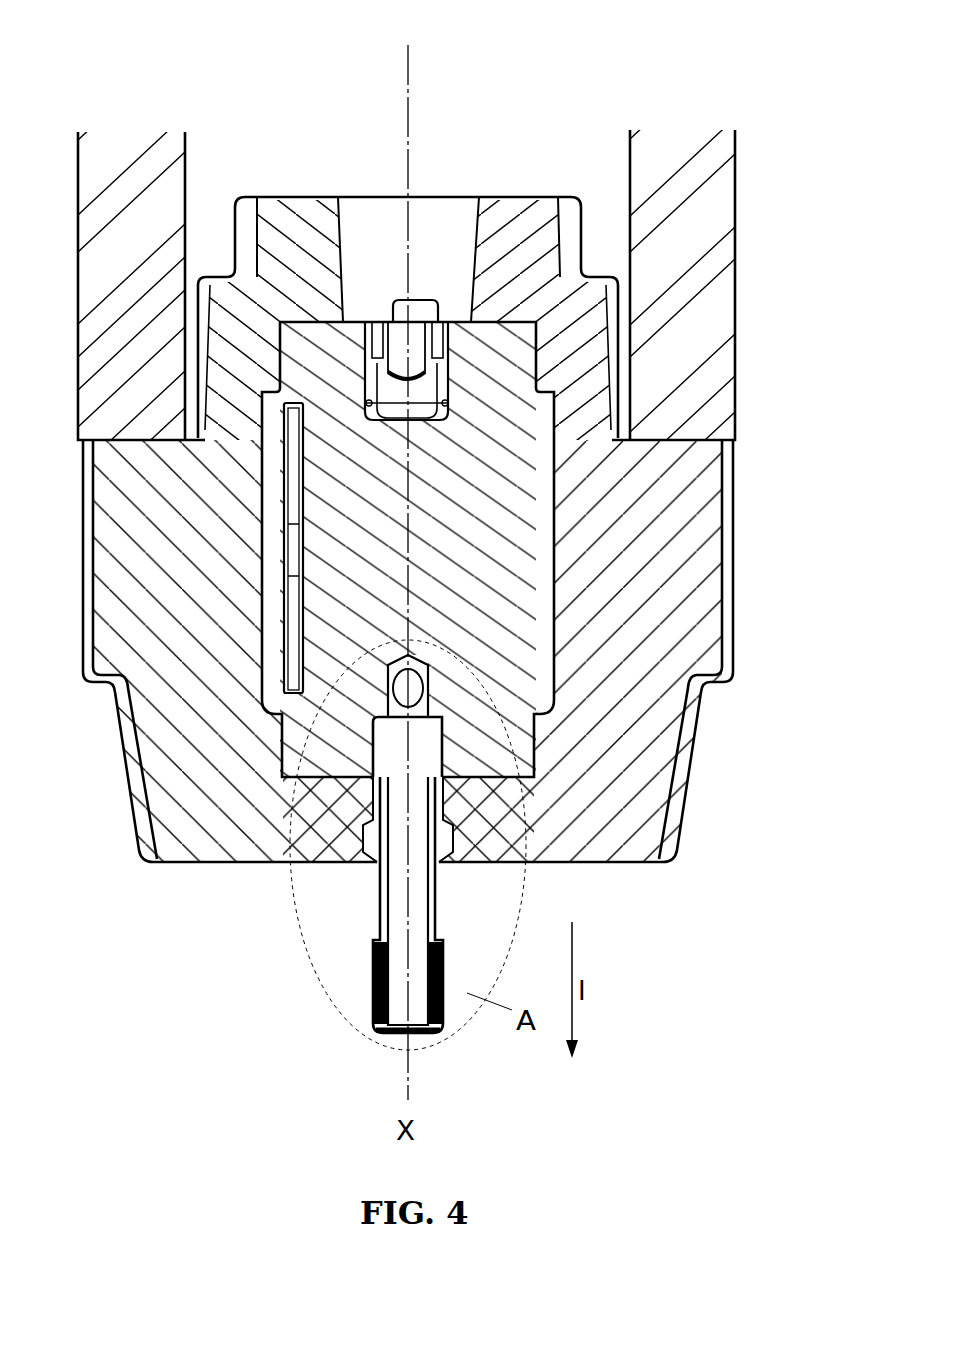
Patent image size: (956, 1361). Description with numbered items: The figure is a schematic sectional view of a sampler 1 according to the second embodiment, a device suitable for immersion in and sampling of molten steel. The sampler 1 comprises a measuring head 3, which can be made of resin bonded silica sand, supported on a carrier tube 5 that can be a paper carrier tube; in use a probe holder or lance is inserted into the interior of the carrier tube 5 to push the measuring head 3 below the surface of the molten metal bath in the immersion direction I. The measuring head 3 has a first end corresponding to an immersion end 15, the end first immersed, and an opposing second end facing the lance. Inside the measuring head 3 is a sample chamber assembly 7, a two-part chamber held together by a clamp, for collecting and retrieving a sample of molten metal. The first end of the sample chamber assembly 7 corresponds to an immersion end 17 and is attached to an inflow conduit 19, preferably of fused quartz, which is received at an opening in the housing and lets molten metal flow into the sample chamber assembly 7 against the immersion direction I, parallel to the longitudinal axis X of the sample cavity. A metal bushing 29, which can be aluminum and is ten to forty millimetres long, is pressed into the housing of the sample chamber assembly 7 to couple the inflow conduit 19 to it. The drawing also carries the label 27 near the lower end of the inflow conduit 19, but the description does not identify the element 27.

The sampler 1 is at (541, 133).
The measuring head 3 is at (593, 380).
The carrier tube 5 is at (170, 223).
The sample chamber assembly 7 is at (340, 322).
The immersion end 15 is at (625, 865).
The immersion end 17 is at (262, 680).
The inflow conduit 19 is at (418, 898).
The tube end portion 27 is at (373, 982).
The metal bushing 29 is at (357, 790).